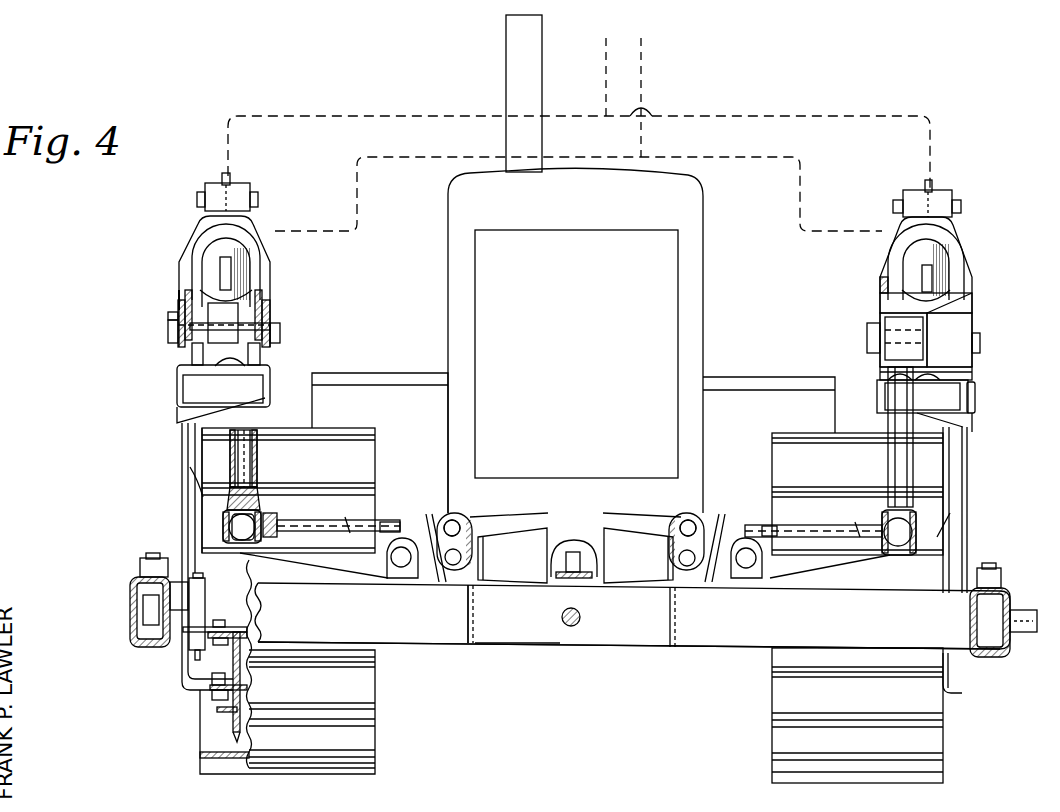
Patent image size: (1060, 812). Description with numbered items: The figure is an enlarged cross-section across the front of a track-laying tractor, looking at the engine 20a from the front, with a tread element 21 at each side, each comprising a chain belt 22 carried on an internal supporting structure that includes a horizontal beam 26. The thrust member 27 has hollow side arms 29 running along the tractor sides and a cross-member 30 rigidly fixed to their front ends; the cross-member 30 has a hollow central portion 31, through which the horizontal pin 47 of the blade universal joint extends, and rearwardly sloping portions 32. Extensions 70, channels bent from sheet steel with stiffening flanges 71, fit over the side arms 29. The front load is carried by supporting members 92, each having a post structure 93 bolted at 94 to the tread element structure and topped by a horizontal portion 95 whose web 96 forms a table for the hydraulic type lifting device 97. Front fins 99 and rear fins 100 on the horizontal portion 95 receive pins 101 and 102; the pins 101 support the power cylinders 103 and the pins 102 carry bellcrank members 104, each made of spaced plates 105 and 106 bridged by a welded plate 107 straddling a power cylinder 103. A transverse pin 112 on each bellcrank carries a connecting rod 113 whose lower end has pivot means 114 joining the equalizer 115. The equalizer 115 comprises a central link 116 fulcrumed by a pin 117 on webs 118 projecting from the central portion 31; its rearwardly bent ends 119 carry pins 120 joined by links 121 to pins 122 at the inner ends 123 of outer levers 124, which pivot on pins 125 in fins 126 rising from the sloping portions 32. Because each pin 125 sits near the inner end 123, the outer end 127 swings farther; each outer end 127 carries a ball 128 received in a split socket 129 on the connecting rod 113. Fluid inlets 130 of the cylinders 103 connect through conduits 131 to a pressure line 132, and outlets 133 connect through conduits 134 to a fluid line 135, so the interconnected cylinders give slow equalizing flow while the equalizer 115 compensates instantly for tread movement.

The engine 20a is at (714, 243).
The tread element 21 is at (344, 418).
The chain belt 22 is at (352, 738).
The horizontal beam 26 is at (232, 664).
The thrust member 27 is at (505, 652).
The side arm 29 is at (170, 604).
The cross-member 30 is at (440, 652).
The central portion 31 is at (540, 640).
The rearwardly sloping portion 32 is at (405, 636).
The horizontal pin 47 is at (574, 627).
The extension 70 is at (132, 585).
The flange 71 is at (155, 553).
The supporting member 92 is at (178, 428).
The post structure 93 is at (186, 462).
The bolt 94 is at (178, 694).
The horizontal portion 95 is at (178, 388).
The web 96 is at (252, 366).
The hydraulic type lifting device 97 is at (178, 268).
The front fin 99 is at (186, 362).
The rear fin 100 is at (190, 350).
The front pin 101 is at (268, 318).
The rear pin 102 is at (283, 336).
The power cylinder 103 is at (212, 245).
The bellcrank member 104 is at (172, 320).
The plate 105 is at (270, 296).
The plate 106 is at (180, 300).
The bridging plate 107 is at (882, 302).
The transverse pin 112 is at (868, 337).
The connecting rod 113 is at (258, 468).
The pivot means 114 is at (222, 540).
The equalizer 115 is at (574, 538).
The central link 116 is at (525, 565).
The fulcrum pin 117 is at (554, 540).
The web 118 is at (595, 575).
The bent end 119 is at (470, 570).
The pin 120 is at (455, 565).
The link 121 is at (456, 527).
The pin 122 is at (452, 520).
The inner end 123 is at (442, 516).
The outer lever 124 is at (345, 517).
The fulcrum pin 125 is at (398, 540).
The fin 126 is at (390, 575).
The outer end 127 is at (292, 520).
The ball 128 is at (236, 520).
The split socket 129 is at (253, 543).
The fluid inlet 130 is at (232, 262).
The conduit 131 is at (802, 175).
The fluid pressure line 132 is at (642, 72).
The outlet 133 is at (232, 188).
The conduit 134 is at (352, 116).
The fluid line 135 is at (606, 78).